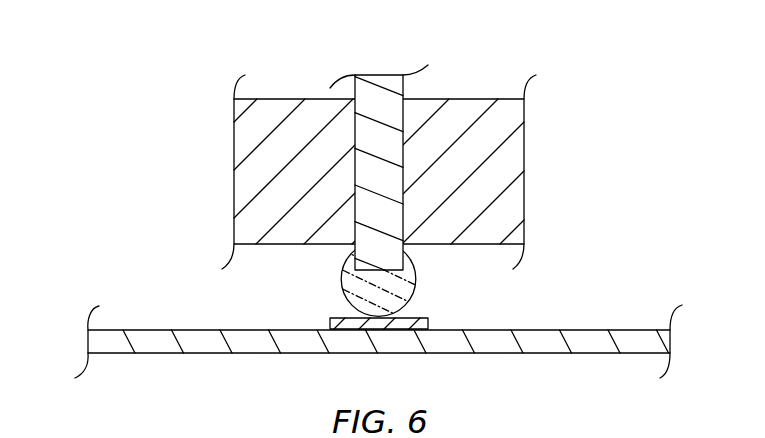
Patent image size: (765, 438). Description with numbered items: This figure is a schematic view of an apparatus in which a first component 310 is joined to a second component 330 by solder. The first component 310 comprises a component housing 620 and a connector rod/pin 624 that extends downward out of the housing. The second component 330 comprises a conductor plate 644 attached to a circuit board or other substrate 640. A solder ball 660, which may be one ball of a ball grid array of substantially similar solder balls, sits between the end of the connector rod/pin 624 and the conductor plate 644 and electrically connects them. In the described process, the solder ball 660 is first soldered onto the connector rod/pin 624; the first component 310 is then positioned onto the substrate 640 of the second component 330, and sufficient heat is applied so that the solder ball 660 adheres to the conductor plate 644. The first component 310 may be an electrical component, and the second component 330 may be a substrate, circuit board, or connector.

The first component 310 is at (357, 174).
The second component 330 is at (375, 300).
The component housing 620 is at (524, 173).
The connector rod/pin 624 is at (380, 75).
The solder ball 660 is at (343, 278).
The conductor plate 644 is at (428, 325).
The substrate 640 is at (670, 340).